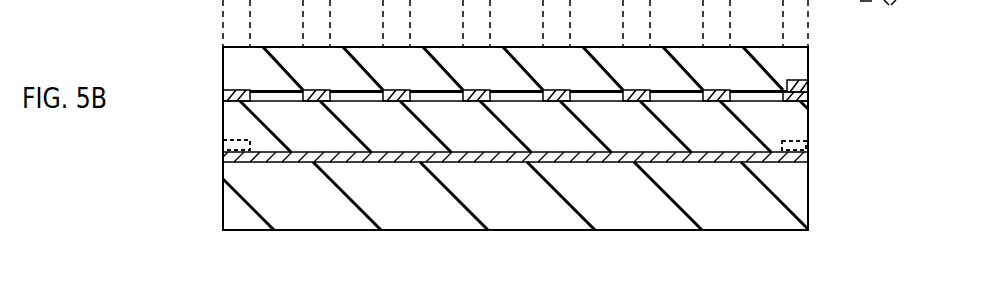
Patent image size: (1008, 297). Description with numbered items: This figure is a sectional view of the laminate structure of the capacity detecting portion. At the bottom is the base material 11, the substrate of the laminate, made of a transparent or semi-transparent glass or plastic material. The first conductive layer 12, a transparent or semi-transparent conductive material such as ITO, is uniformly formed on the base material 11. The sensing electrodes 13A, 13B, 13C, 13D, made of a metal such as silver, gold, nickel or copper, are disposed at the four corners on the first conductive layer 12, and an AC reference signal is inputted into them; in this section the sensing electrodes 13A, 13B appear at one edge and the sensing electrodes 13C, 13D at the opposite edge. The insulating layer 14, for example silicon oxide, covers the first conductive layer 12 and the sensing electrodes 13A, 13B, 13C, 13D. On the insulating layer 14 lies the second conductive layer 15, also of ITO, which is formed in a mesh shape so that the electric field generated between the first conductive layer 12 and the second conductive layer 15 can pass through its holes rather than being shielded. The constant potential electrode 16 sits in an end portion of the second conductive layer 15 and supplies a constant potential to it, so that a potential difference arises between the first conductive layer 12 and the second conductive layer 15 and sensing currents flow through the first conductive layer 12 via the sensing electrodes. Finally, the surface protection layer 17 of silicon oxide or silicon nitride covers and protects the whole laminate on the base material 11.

The base material 11 is at (795, 190).
The first conductive layer 12 is at (806, 160).
The sensing electrode 13A is at (223, 144).
The sensing electrode 13B is at (236, 145).
The sensing electrode 13C is at (806, 145).
The sensing electrode 13D is at (794, 145).
The insulating layer 14 is at (795, 119).
The second conductive layer 15 is at (800, 98).
The constant potential electrode 16 is at (801, 77).
The surface protection layer 17 is at (792, 59).